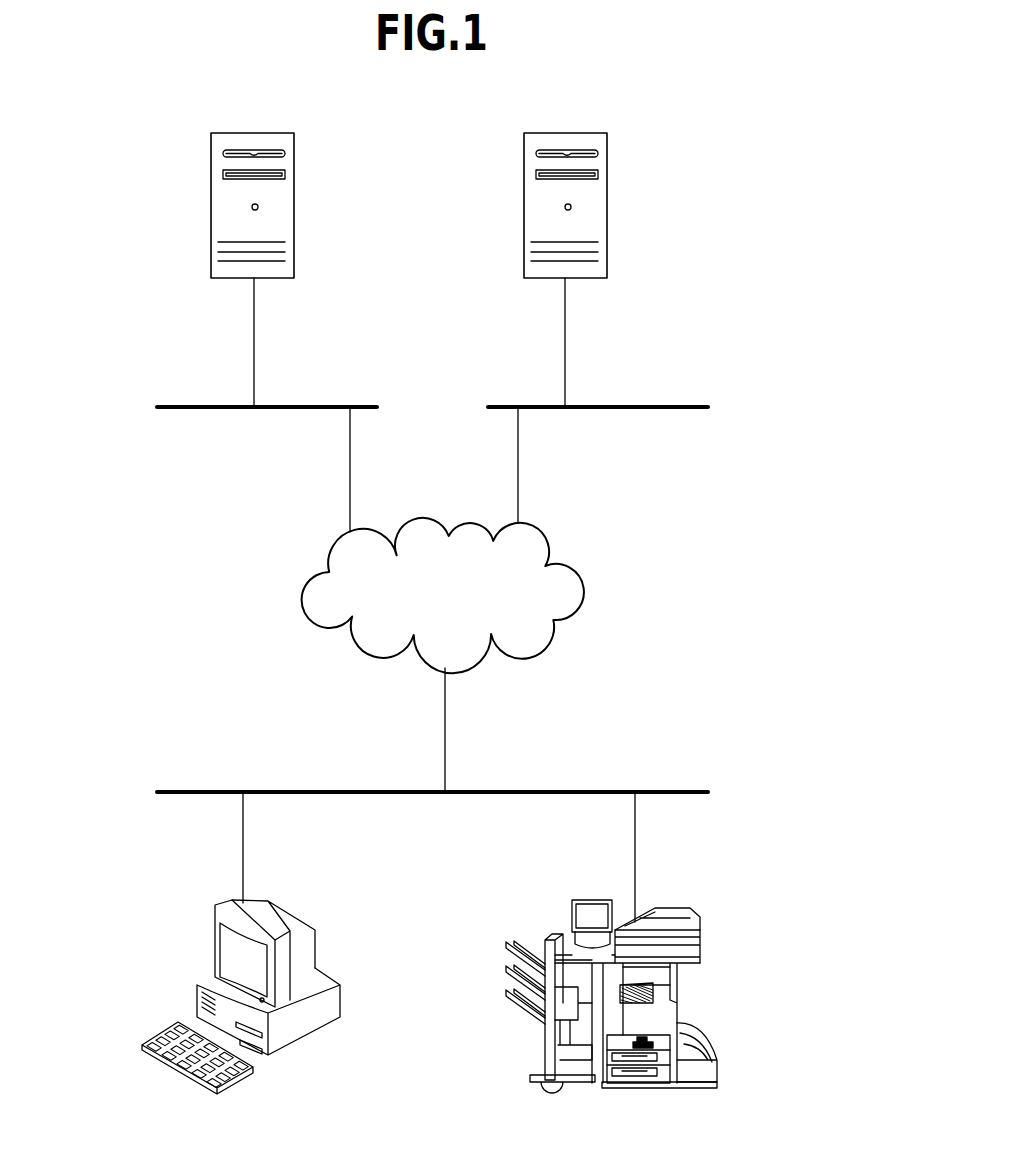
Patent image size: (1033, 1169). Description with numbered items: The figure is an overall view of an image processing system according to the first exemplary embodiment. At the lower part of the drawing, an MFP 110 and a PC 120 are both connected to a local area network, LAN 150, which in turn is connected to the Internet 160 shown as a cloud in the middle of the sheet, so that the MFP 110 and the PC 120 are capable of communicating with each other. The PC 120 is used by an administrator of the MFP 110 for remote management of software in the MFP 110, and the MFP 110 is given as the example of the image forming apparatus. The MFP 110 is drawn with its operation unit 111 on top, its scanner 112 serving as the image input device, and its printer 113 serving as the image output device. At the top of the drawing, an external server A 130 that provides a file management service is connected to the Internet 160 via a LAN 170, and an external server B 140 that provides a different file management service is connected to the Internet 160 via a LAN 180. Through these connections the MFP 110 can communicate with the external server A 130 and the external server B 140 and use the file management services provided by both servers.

The MFP 110 is at (611, 993).
The operation unit 111 is at (592, 908).
The scanner 112 is at (666, 925).
The printer 113 is at (658, 1010).
The PC 120 is at (291, 913).
The external server A 130 is at (254, 133).
The external server B 140 is at (566, 133).
The LAN 150 is at (676, 790).
The Internet 160 is at (430, 522).
The LAN 170 is at (193, 405).
The LAN 180 is at (676, 405).